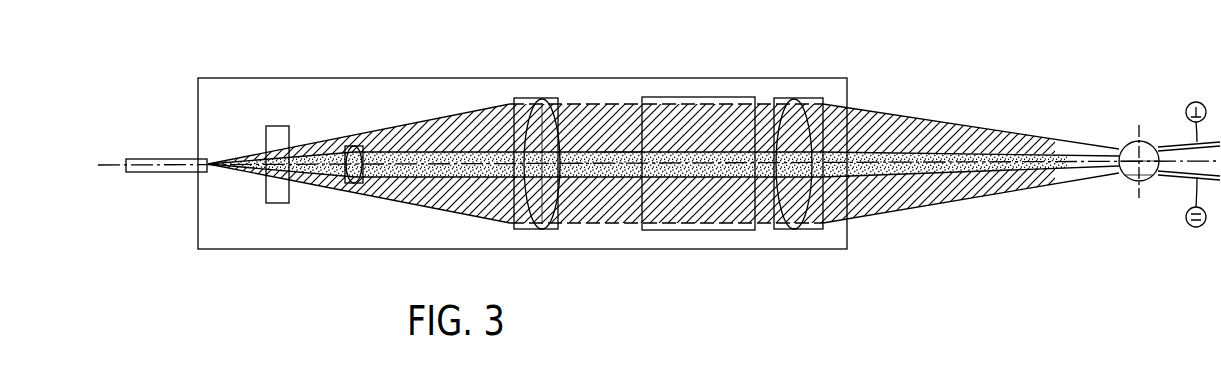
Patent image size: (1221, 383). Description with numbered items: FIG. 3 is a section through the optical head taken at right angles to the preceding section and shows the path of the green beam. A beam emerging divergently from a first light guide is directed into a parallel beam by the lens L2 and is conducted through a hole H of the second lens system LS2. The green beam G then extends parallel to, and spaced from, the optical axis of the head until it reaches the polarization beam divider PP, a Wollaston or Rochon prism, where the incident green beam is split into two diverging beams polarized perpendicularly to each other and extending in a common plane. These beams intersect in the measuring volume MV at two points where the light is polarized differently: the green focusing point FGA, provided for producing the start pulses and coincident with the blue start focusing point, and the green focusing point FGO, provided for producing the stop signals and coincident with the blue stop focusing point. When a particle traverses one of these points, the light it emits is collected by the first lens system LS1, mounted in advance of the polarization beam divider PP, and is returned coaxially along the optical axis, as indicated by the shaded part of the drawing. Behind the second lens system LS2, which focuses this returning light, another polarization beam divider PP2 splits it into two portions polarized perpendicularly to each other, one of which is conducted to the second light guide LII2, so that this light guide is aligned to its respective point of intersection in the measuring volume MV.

The second light guide LII2 is at (140, 174).
The polarization beam divider PP2 is at (278, 135).
The lens L2 is at (349, 191).
The second lens system LS2 is at (521, 231).
The hole H is at (541, 150).
The green beam G is at (607, 152).
The polarization beam divider PP is at (700, 122).
The first lens system LS1 is at (795, 120).
The green focusing point FGA is at (1131, 143).
The measuring volume MV is at (1146, 143).
The green focusing point FGO is at (1131, 178).